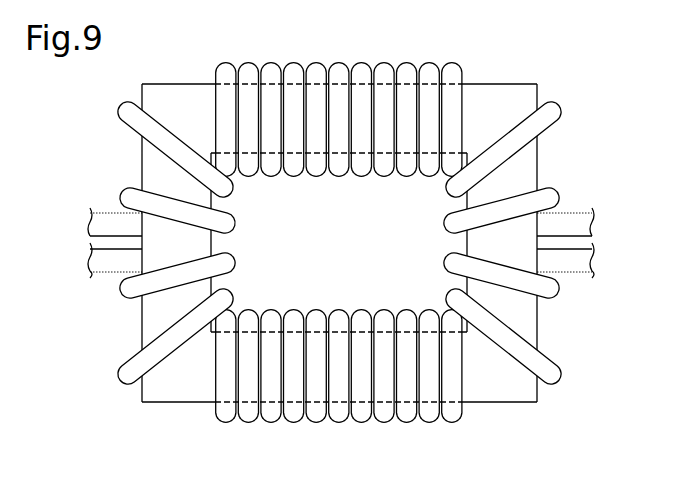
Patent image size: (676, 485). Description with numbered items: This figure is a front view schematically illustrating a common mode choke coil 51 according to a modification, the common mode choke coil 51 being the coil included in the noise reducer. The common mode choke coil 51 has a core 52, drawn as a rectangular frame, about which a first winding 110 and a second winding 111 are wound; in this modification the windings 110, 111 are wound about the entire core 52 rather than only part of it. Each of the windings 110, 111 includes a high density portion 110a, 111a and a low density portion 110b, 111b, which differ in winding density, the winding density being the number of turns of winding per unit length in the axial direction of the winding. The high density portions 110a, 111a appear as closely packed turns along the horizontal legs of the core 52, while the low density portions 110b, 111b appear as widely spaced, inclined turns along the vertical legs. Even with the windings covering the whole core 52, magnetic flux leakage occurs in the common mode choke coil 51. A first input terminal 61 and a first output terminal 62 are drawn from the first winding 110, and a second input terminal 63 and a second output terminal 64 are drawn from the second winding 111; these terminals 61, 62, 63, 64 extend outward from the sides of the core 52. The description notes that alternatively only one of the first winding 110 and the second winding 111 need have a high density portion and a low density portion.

The common mode choke coil 51 is at (358, 235).
The core 52 is at (494, 81).
The first input terminal 61 is at (578, 272).
The first output terminal 62 is at (96, 272).
The second input terminal 63 is at (578, 213).
The second output terminal 64 is at (96, 213).
The first winding 110 is at (378, 365).
The high density portion 110a is at (386, 423).
The low density portion 110b is at (559, 382).
The second winding 111 is at (378, 122).
The high density portion 111a is at (386, 62).
The low density portion 111b is at (559, 104).